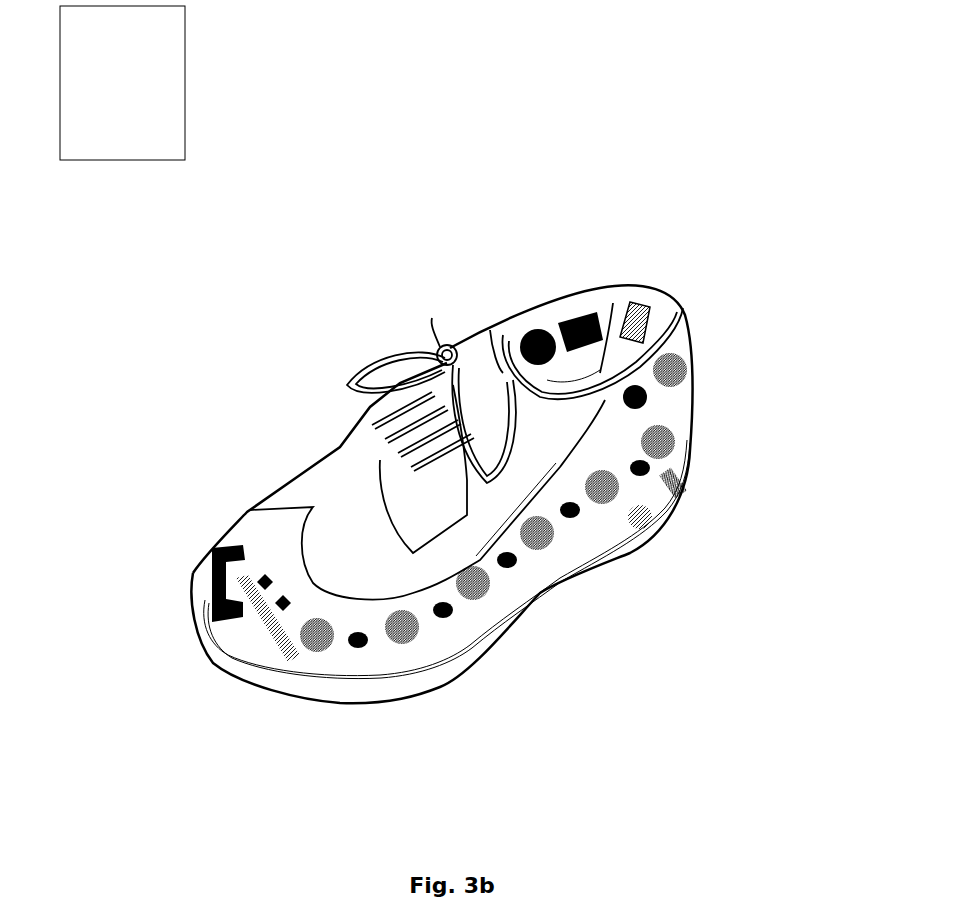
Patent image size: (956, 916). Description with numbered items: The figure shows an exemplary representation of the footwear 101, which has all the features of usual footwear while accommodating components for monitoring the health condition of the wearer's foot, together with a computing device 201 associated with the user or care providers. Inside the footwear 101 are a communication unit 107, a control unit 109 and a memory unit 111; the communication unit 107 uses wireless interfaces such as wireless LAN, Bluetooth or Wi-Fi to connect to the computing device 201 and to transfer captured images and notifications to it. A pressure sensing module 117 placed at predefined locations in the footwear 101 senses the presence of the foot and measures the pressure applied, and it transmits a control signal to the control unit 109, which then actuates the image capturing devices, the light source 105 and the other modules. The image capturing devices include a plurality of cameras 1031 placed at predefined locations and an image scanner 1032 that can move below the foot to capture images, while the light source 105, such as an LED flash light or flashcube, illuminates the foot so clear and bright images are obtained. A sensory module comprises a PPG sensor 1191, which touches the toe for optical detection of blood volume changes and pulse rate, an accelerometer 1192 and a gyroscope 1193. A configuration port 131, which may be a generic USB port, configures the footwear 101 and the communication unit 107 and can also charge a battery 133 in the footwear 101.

The computing device 201 is at (498, 324).
The footwear 101 is at (303, 500).
The communication unit 107 is at (530, 317).
The control unit 109 is at (600, 310).
The memory unit 111 is at (653, 313).
The accelerometer 1192 is at (680, 347).
The gyroscope 1193 is at (650, 397).
The battery 133 is at (697, 480).
The configuration port 131 is at (657, 537).
The cameras 1031 is at (405, 636).
The pressure sensing module 117 is at (510, 567).
The PPG sensor 1191 is at (208, 563).
The light source 105 is at (278, 606).
The image scanner 1032 is at (268, 638).